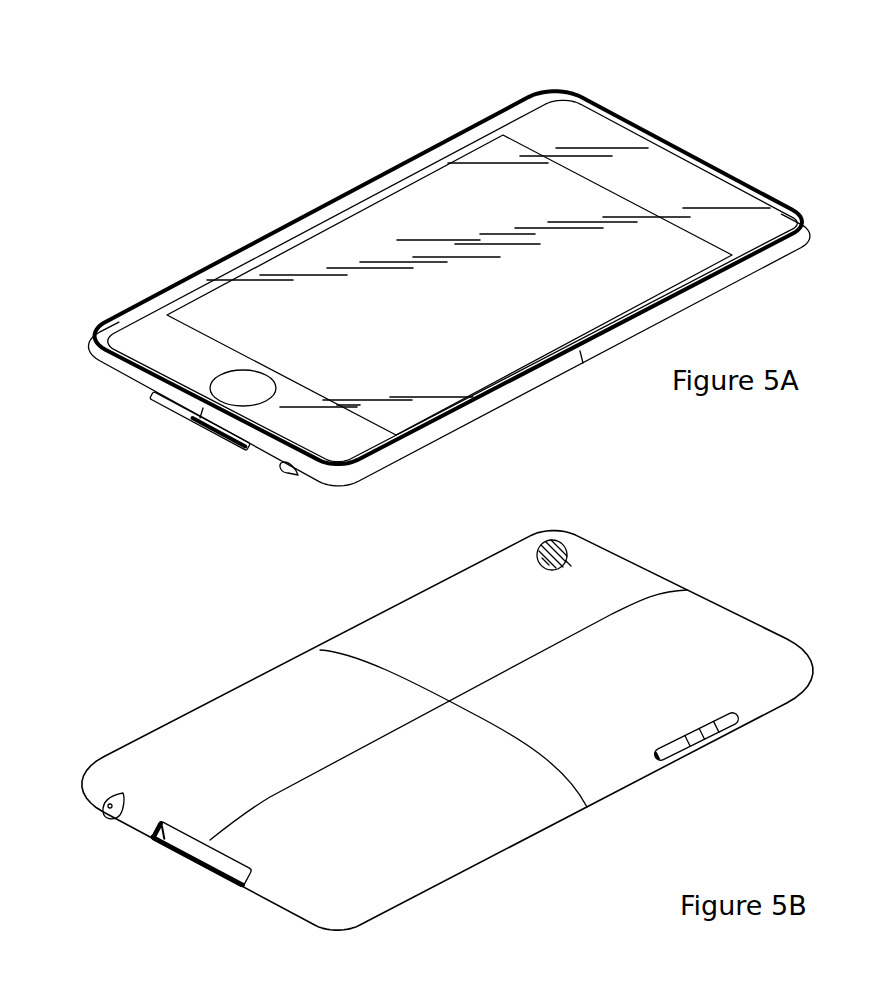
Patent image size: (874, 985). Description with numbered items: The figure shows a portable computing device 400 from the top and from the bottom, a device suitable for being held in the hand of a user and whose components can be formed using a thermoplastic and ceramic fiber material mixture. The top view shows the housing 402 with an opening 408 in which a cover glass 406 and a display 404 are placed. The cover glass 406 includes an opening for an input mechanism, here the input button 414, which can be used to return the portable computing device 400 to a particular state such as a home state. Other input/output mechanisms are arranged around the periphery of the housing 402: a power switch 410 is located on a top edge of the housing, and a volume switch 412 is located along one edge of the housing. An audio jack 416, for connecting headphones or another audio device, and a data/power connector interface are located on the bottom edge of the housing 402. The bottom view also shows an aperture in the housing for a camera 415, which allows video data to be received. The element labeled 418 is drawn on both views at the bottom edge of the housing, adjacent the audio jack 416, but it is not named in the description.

In FIG. 5A, the portable computing device 400 is at (180, 86).
In FIG. 5A, the housing 402 is at (594, 363).
In FIG. 5B, the housing 402 is at (469, 566).
In FIG. 5A, the display 404 is at (602, 177).
In FIG. 5A, the cover glass 406 is at (363, 226).
In FIG. 5A, the opening 408 is at (560, 118).
In FIG. 5B, the power switch 410 is at (766, 628).
In FIG. 5B, the volume switch 412 is at (724, 722).
In FIG. 5A, the input button 414 is at (240, 376).
In FIG. 5B, the camera 415 is at (553, 541).
In FIG. 5A, the audio jack 416 is at (283, 484).
In FIG. 5B, the audio jack 416 is at (94, 821).
In FIG. 5A, the speaker / connector opening 418 is at (178, 415).
In FIG. 5B, the speaker / connector opening 418 is at (158, 863).